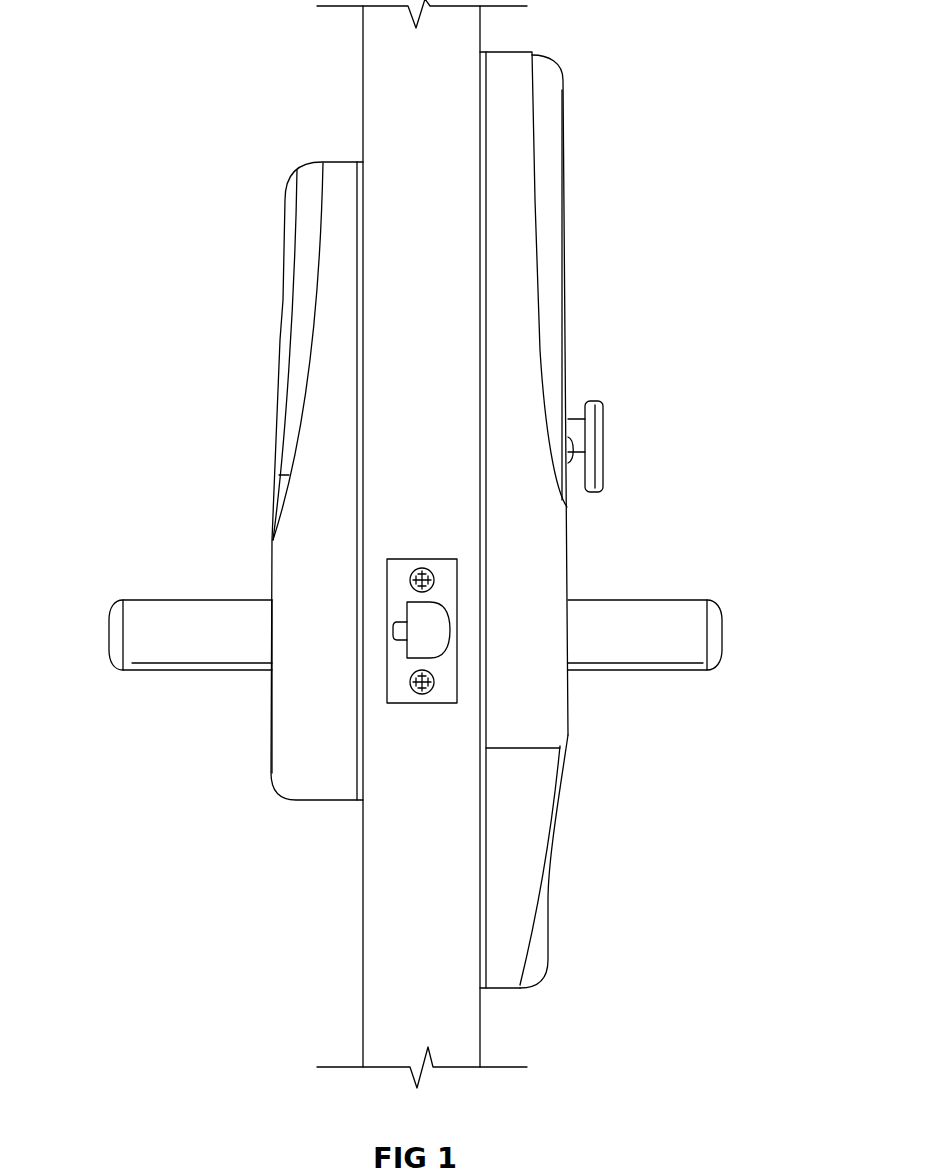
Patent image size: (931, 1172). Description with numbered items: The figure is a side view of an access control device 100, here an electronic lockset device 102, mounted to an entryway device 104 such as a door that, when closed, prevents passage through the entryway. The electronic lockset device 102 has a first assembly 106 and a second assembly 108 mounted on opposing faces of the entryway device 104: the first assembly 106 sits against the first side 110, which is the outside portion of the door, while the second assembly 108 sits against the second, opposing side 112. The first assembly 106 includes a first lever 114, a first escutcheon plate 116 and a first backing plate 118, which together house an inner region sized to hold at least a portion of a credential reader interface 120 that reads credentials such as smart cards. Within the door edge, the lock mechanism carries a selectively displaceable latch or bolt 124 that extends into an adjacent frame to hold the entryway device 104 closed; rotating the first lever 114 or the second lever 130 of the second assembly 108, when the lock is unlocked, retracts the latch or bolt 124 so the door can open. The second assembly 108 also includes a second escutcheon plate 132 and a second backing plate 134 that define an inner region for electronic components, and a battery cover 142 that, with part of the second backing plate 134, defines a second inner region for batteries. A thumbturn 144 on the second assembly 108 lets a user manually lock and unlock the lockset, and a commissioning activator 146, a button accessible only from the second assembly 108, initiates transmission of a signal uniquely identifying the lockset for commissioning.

The access control device 100 is at (415, 536).
The electronic lockset device 102 is at (249, 41).
The entryway device 104 is at (438, 200).
The first assembly 106 is at (288, 562).
The second assembly 108 is at (540, 564).
The first side 110 is at (363, 944).
The second side 112 is at (481, 1018).
The first lever 114 is at (125, 637).
The first escutcheon plate 116 is at (287, 732).
The first backing plate 118 is at (363, 778).
The credential reader interface 120 is at (308, 262).
The latch or bolt 124 is at (438, 630).
The second lever 130 is at (695, 635).
The second escutcheon plate 132 is at (548, 275).
The second backing plate 134 is at (480, 112).
The battery cover 142 is at (550, 915).
The thumbturn 144 is at (594, 432).
The commissioning activator 146 is at (574, 457).